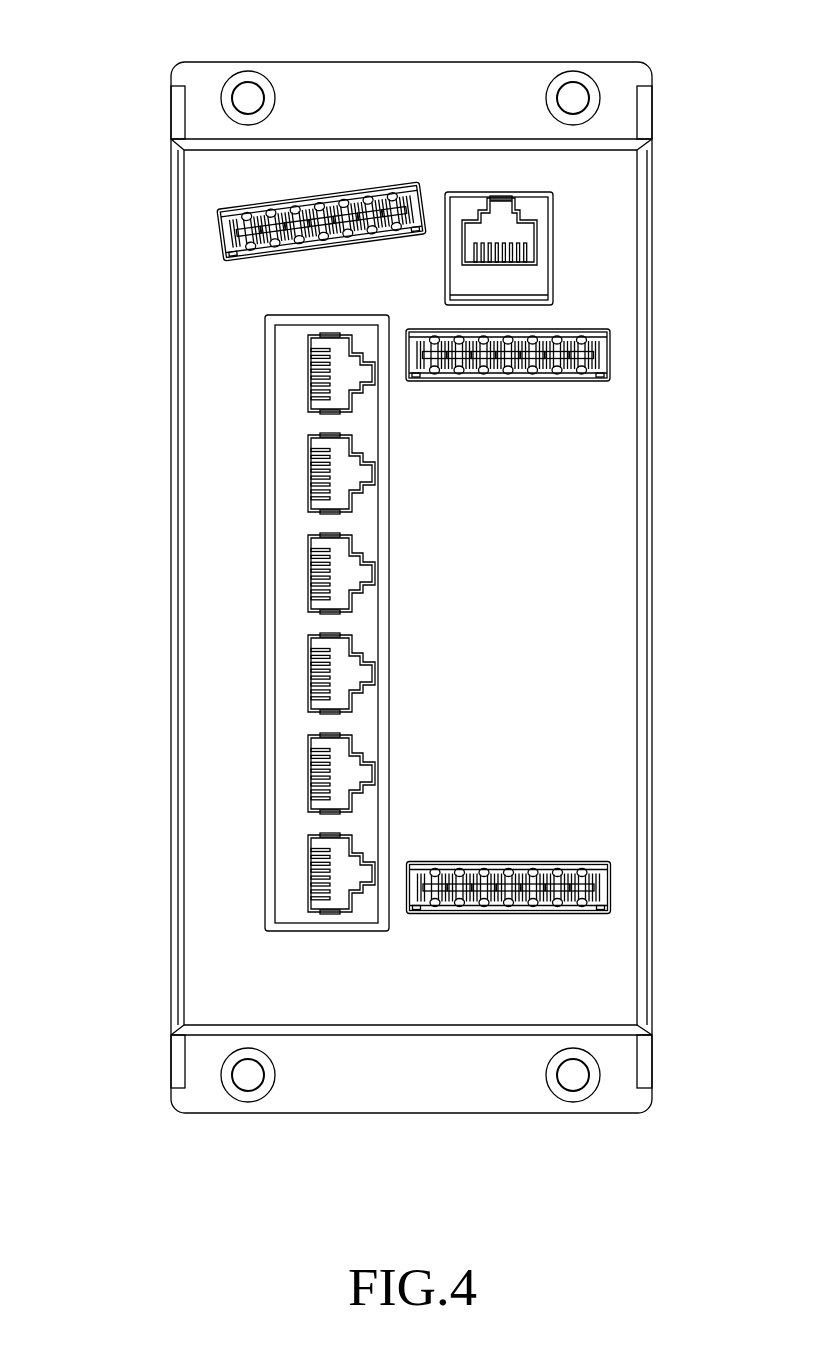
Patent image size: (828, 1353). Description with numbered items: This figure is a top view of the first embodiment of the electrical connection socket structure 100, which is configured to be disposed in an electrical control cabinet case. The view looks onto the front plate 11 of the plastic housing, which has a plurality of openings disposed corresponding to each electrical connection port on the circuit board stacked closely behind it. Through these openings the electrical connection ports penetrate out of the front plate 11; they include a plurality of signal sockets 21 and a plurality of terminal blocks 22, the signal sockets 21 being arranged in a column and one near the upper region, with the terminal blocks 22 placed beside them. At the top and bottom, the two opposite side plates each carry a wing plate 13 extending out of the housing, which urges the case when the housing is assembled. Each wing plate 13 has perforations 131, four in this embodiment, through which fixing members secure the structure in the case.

The electrical connection socket structure 100 is at (92, 119).
The front plate 11 is at (598, 488).
The wing plate 13 is at (305, 75).
The perforation 131 is at (248, 88).
The signal socket 21 is at (553, 283).
The terminal block 22 is at (222, 244).